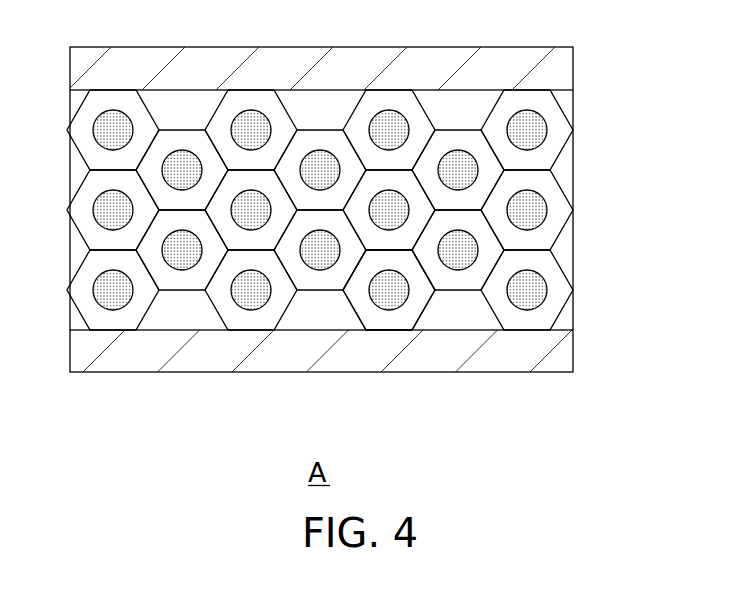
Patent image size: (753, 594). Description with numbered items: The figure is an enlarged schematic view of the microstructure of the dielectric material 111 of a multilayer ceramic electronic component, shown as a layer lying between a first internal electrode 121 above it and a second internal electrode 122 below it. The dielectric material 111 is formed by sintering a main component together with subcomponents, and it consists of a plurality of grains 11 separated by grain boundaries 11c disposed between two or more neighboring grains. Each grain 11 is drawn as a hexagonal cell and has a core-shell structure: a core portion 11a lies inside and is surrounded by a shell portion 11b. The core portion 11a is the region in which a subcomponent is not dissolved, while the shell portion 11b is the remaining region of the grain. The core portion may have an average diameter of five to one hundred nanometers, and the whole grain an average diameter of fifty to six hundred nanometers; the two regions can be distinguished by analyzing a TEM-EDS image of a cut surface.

The first internal electrode 121 is at (573, 70).
The second internal electrode 122 is at (573, 352).
The dielectric material 111 is at (358, 279).
The grain 11 is at (358, 279).
The core portion 11a is at (392, 298).
The shell portion 11b is at (418, 297).
The grain boundary 11c is at (569, 172).